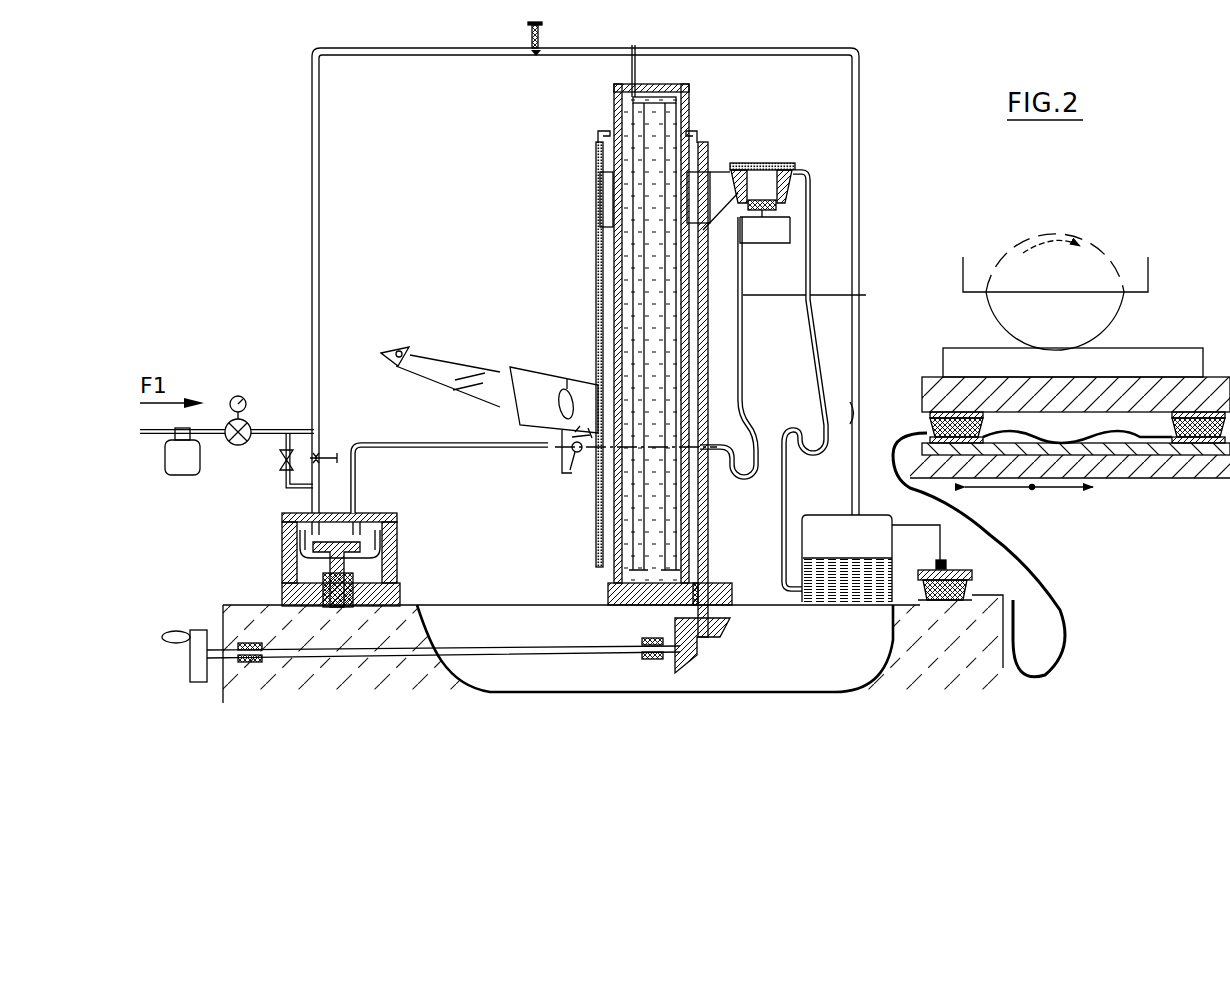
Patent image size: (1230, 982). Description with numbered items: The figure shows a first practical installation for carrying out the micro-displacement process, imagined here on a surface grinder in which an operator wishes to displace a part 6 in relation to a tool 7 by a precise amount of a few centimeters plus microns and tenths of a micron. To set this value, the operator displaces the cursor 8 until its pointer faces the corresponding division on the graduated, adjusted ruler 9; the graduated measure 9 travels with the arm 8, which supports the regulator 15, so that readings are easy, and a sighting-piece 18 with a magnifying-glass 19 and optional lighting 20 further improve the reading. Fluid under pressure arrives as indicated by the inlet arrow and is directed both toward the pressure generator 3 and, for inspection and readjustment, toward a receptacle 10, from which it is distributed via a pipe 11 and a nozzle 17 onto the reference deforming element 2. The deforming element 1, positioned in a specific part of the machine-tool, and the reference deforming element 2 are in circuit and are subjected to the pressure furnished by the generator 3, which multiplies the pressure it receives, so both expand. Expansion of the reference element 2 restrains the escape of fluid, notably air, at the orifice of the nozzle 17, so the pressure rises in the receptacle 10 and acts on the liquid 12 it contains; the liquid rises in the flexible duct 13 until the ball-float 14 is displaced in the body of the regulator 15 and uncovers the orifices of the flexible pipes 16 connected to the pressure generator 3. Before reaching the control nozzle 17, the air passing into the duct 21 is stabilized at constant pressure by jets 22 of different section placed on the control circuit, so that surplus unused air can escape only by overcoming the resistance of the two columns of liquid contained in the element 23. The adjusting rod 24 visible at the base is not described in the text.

The deforming element 1 is at (1140, 408).
The reference deforming element 2 is at (951, 568).
The pressure generator 3 is at (397, 556).
The part 6 is at (1158, 349).
The tool 7 is at (1085, 325).
The cursor 8 is at (717, 203).
The graduated ruler 9 is at (596, 280).
The receptacle 10 is at (840, 514).
The pipe 11 is at (907, 523).
The liquid 12 is at (830, 586).
The flexible duct 13 is at (821, 387).
The ball-float 14 is at (764, 177).
The regulator 15 is at (796, 167).
The flexible pipes 16 is at (237, 396).
The nozzle 17 is at (936, 563).
The sighting-piece 18 is at (525, 371).
The magnifying-glass 19 is at (566, 386).
The lighting 20 is at (567, 468).
The duct 21 is at (312, 98).
The jets 22 is at (533, 53).
The liquid columns container 23 is at (612, 237).
The adjusting rod 24 is at (420, 655).